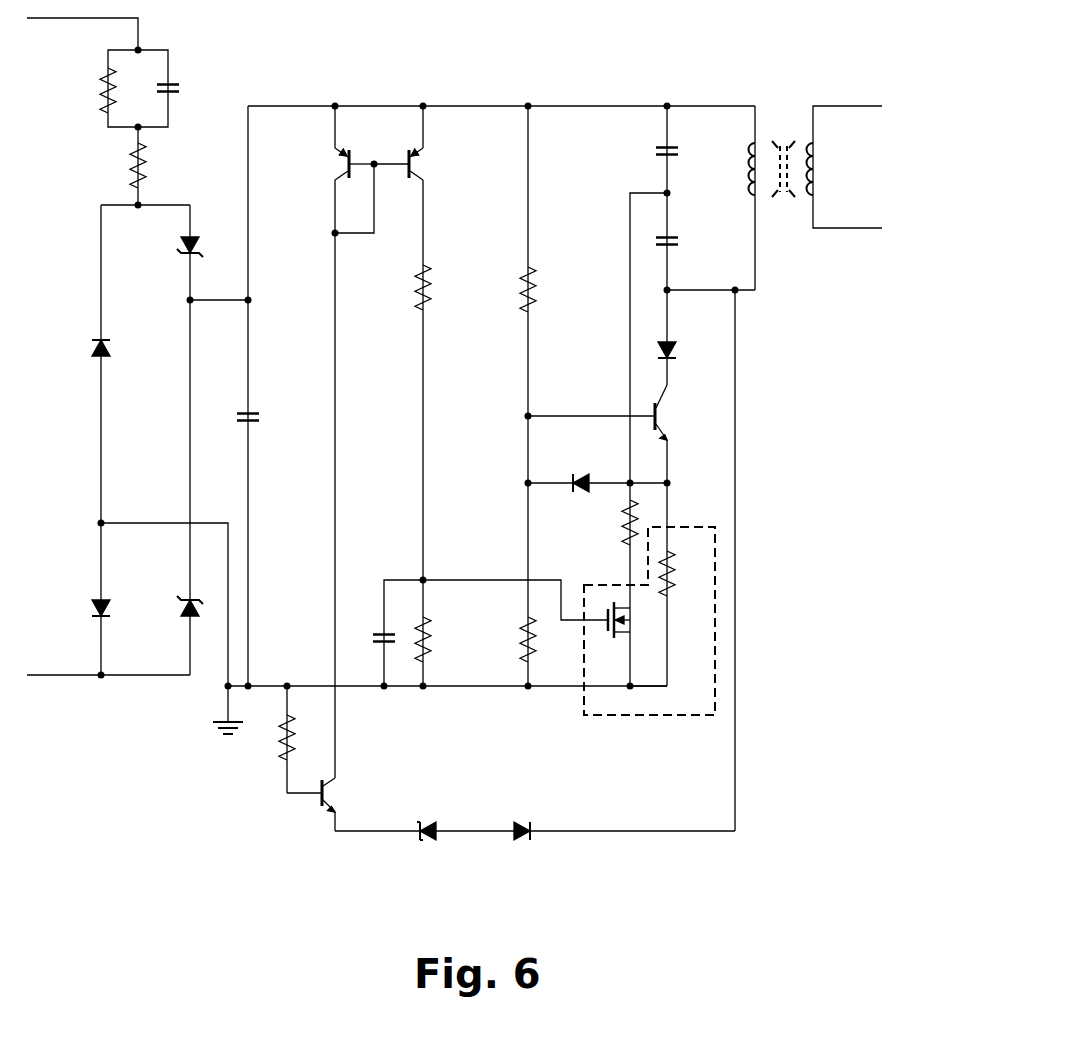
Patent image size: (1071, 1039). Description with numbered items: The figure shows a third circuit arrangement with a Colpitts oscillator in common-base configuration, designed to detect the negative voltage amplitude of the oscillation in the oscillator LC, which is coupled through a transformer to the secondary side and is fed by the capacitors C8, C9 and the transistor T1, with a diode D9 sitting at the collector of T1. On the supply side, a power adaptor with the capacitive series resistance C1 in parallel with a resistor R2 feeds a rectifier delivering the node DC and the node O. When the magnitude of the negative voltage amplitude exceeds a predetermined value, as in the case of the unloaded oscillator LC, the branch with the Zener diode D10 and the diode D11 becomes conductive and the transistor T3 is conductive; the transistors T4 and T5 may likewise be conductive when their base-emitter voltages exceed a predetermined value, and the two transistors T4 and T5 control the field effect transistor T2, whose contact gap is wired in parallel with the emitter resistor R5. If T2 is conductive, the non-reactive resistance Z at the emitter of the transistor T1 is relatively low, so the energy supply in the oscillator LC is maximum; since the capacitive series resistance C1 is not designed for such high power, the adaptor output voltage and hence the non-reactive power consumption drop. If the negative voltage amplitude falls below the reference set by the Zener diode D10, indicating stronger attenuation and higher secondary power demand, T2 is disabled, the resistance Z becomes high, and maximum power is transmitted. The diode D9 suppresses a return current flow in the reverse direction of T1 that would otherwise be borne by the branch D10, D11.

The resistor R2 is at (101, 88).
The capacitive series resistance C1 is at (176, 88).
The output node O is at (163, 590).
The DC supply node DC is at (219, 287).
The transistor T5 is at (338, 143).
The transistor T4 is at (418, 143).
The capacitor C8 is at (685, 152).
The capacitor C9 is at (685, 242).
The oscillator LC is at (693, 104).
The diode D9 is at (687, 353).
The transistor T1 is at (618, 434).
The non-reactive resistance Z is at (695, 599).
The emitter resistor R5 is at (687, 584).
The field effect transistor T2 is at (611, 635).
The transistor T3 is at (325, 758).
The Zener diode D10 is at (428, 852).
The diode D11 is at (525, 852).